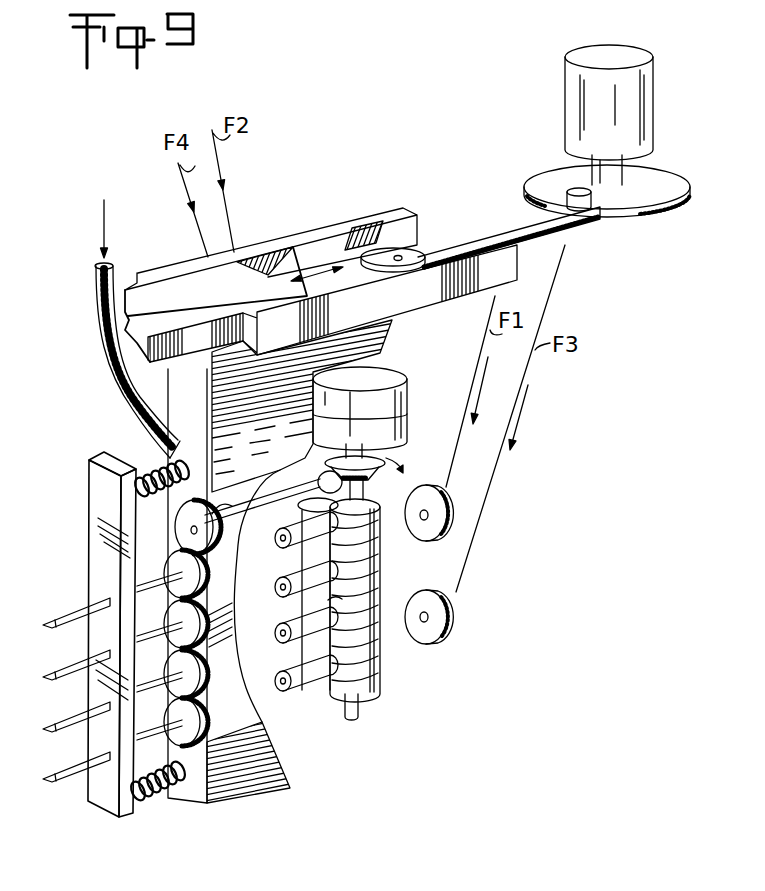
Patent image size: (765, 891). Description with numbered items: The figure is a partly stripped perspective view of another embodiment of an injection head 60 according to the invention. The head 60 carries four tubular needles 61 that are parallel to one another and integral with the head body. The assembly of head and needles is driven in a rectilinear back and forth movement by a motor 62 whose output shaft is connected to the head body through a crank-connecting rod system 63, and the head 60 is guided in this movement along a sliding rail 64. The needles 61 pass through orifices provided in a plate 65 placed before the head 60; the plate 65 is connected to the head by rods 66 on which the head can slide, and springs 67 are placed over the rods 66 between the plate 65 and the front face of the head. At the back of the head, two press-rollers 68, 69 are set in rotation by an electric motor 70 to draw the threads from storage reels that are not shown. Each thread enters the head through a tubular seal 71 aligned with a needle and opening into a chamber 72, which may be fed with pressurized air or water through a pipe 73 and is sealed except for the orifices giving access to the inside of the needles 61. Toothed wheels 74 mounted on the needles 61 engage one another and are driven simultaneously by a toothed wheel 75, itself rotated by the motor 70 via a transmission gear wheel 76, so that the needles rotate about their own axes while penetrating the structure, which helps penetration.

The head 60 is at (334, 210).
The tubular needles 61 is at (72, 613).
The motor 62 is at (577, 90).
The crank-connecting rod system 63 is at (504, 217).
The sliding rail 64 is at (163, 297).
The plate 65 is at (100, 497).
The rods 66 is at (154, 496).
The springs 67 is at (147, 470).
The press-roller 68 is at (365, 632).
The press-roller 69 is at (380, 672).
The electric motor 70 is at (397, 400).
The tubular seal 71 is at (296, 547).
The chamber 72 is at (298, 596).
The pipe 73 is at (103, 366).
The toothed wheels 74 is at (207, 727).
The toothed wheel 75 is at (198, 498).
The transmission gear wheel 76 is at (366, 484).